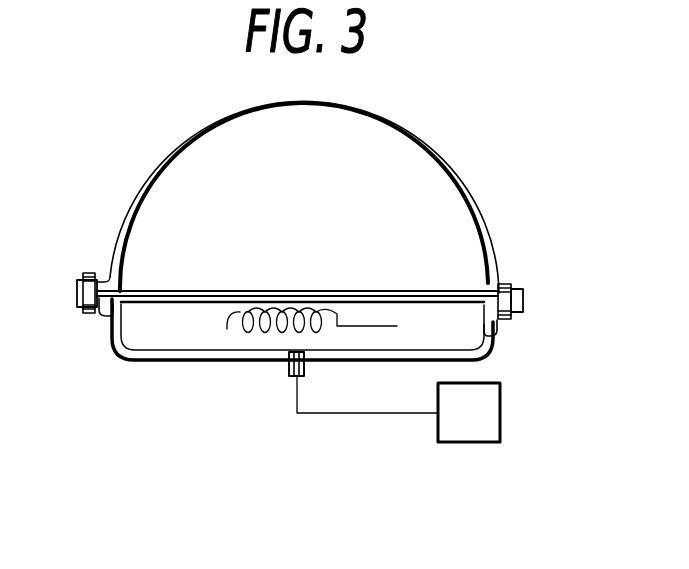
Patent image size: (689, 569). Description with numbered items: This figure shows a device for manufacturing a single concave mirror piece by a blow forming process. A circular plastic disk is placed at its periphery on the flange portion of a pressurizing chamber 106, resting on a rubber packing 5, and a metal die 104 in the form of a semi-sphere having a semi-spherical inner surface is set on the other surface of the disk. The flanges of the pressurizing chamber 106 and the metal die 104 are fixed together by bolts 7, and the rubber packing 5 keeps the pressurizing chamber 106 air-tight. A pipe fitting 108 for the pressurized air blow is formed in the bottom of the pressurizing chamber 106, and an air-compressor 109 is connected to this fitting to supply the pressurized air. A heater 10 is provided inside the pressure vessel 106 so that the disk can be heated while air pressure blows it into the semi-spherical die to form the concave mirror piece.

The metal die 104 is at (483, 215).
The pressurizing chamber 106 is at (212, 363).
The pipe fitting 108 is at (288, 373).
The air-compressor 109 is at (500, 418).
The bolts 7 is at (88, 273).
The rubber packing 5 is at (110, 317).
The heater 10 is at (367, 328).